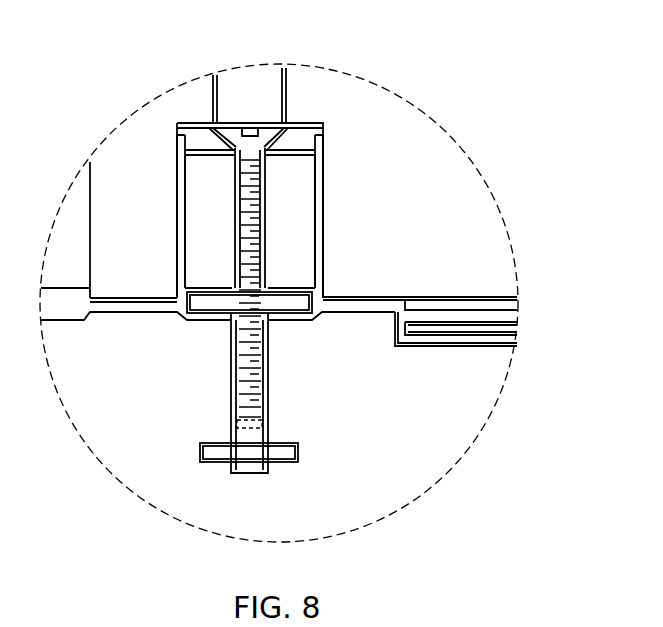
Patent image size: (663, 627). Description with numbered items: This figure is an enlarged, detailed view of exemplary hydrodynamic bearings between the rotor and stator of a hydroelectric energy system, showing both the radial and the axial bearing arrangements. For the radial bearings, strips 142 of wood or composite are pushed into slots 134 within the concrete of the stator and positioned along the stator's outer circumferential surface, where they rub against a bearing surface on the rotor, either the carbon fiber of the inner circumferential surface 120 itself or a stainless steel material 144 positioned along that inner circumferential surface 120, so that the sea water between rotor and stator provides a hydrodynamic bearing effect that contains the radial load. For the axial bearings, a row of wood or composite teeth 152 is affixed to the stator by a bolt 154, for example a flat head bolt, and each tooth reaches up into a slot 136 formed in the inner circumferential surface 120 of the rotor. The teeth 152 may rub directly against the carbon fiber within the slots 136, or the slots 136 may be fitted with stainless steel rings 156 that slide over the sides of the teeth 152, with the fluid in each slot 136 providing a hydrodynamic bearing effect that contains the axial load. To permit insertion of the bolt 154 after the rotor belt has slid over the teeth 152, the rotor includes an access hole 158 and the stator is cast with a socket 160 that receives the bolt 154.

The inner circumferential surface 120 is at (487, 297).
The slots 134 is at (410, 346).
The slots 136 is at (180, 118).
The strips 142 is at (460, 335).
The stainless steel material 144 is at (415, 310).
The teeth 152 is at (303, 182).
The bolt 154 is at (252, 353).
The stainless steel rings 156 is at (177, 167).
The access holes 158 is at (282, 92).
The sockets 160 is at (252, 465).